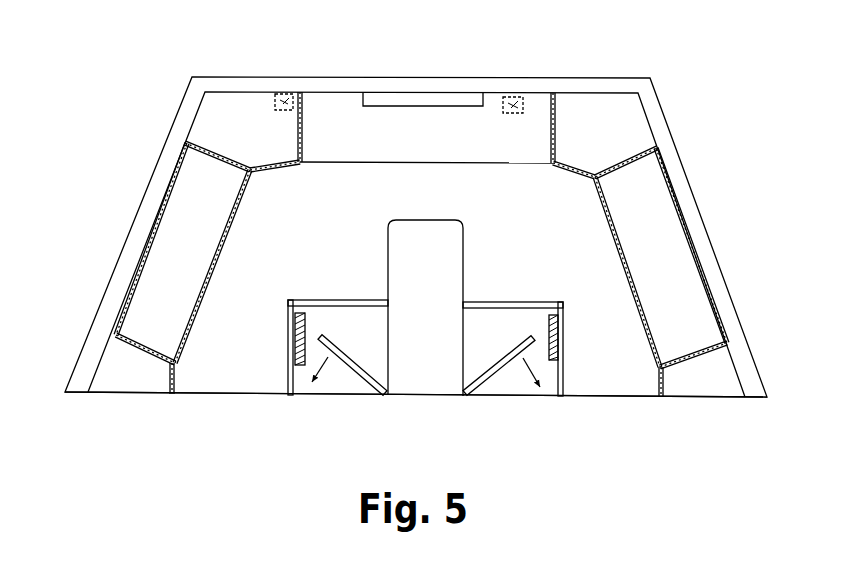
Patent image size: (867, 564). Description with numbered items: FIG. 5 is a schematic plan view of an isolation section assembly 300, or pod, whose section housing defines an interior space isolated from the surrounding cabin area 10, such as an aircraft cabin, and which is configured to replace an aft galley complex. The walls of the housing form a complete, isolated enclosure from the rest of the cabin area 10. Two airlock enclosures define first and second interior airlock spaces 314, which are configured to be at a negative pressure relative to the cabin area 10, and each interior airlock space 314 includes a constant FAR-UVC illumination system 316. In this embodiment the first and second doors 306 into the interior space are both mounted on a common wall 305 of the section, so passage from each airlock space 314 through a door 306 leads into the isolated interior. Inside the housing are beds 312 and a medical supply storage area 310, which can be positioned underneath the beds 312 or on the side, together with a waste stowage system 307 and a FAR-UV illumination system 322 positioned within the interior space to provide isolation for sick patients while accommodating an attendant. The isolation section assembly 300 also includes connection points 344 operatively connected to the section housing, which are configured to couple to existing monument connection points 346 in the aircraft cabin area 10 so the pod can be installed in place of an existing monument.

The isolation section assembly 300 is at (117, 115).
The cabin area 10 is at (603, 433).
The common wall 305 is at (403, 397).
The door 306 is at (372, 390).
The waste stowage system 307 is at (232, 104).
The medical supply storage area 310 is at (139, 230).
The bed 312 is at (433, 143).
The interior airlock space 314 is at (349, 316).
The constant FAR-UVC illumination system 316 is at (285, 343).
The FAR-UV illumination system 322 is at (406, 93).
The connection point 344 is at (277, 105).
The monument connection point 346 is at (289, 97).